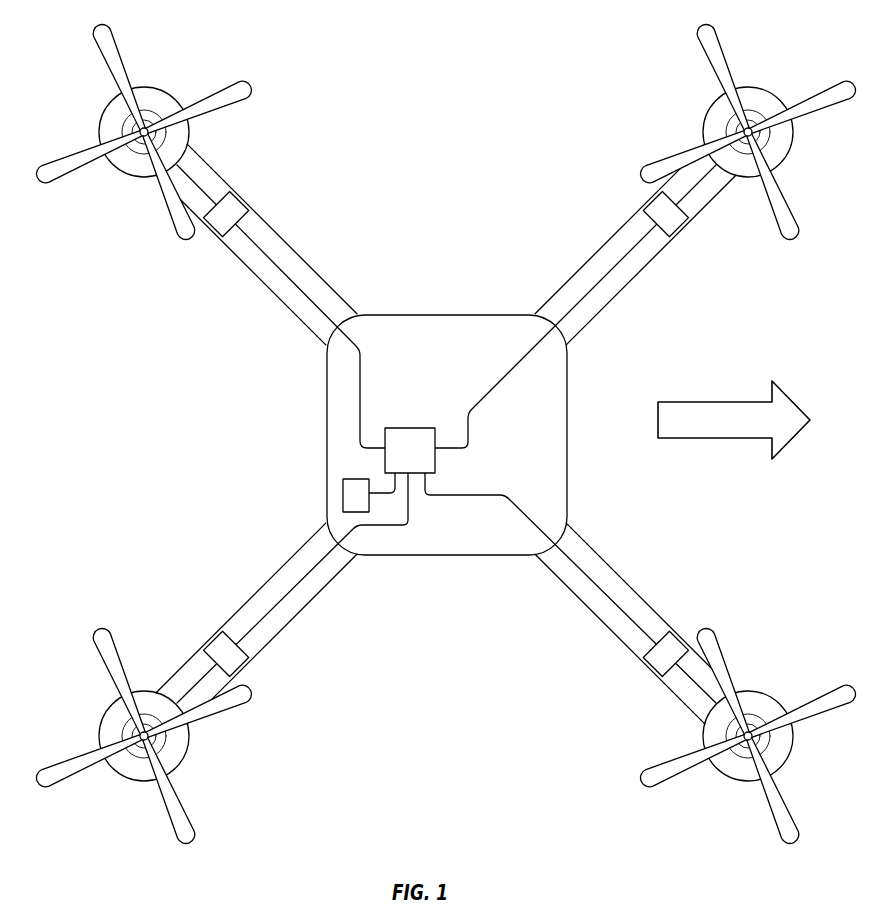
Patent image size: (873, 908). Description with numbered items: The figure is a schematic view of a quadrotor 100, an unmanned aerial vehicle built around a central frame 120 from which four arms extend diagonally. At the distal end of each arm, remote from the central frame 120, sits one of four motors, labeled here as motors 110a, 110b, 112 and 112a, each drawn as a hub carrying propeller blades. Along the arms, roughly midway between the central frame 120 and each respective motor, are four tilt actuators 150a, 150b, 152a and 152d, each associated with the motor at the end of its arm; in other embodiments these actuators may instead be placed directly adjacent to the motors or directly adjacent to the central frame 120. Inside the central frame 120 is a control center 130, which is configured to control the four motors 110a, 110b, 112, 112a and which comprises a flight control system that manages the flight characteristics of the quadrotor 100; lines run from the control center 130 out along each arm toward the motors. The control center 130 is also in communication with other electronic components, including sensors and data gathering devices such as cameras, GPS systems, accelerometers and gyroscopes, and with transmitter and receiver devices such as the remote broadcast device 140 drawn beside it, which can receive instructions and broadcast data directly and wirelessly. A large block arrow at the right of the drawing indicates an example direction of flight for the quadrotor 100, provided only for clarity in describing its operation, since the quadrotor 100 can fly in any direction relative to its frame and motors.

The quadrotor 100 is at (489, 97).
The motor 110a is at (130, 727).
The motor 110b is at (152, 125).
The third rotor 112 is at (732, 128).
The motor 112a is at (750, 720).
The central frame 120 is at (567, 377).
The control center 130 is at (427, 455).
The remote broadcast device 140 is at (343, 497).
The tilt actuator 150a is at (230, 660).
The tilt actuator 150b is at (230, 210).
The tilt actuator 152a is at (663, 662).
The fourth motor 152d is at (670, 216).